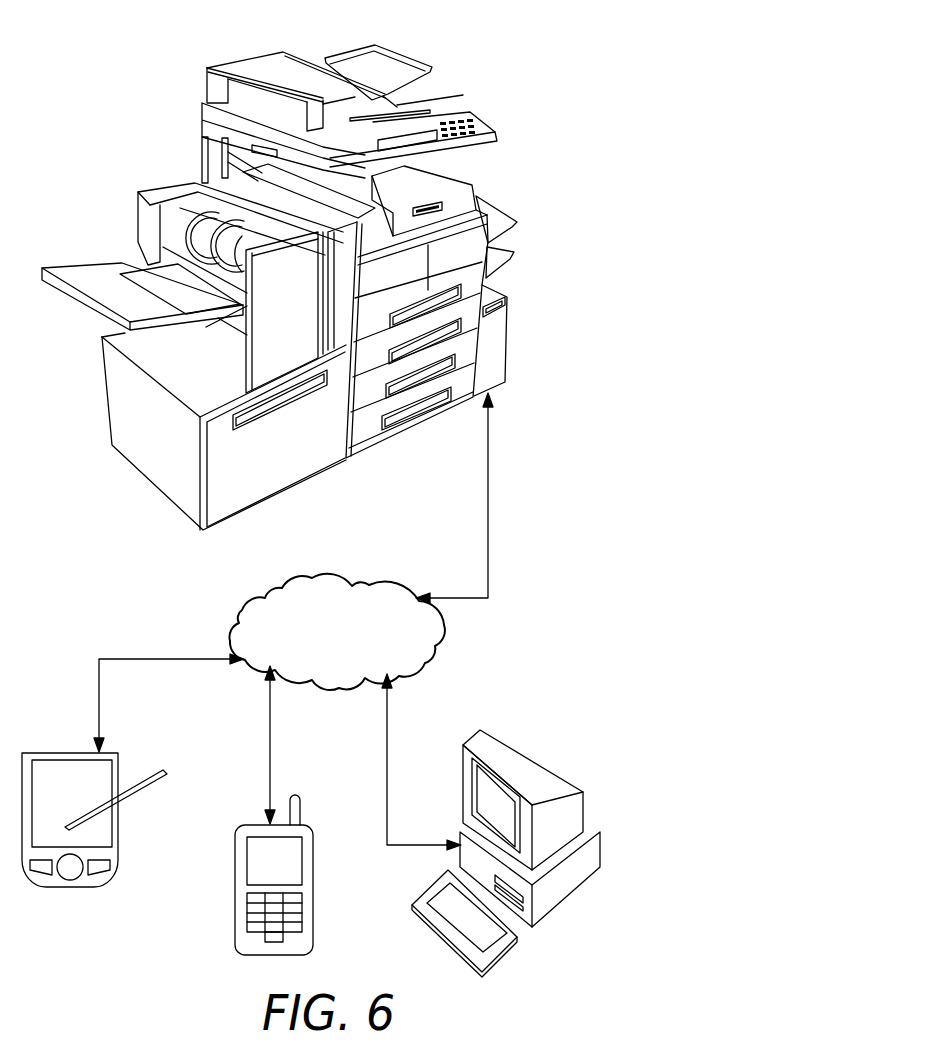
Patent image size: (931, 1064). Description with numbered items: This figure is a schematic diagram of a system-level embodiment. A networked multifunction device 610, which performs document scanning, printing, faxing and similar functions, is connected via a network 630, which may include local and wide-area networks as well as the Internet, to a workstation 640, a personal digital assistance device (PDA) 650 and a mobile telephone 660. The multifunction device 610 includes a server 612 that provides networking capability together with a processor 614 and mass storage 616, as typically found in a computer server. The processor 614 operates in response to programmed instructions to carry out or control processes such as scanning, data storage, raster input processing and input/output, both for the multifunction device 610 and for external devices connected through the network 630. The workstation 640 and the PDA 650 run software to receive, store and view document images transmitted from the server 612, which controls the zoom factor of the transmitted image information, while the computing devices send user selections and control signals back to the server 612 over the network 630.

The networked multifunction device 610 is at (425, 41).
The server 612 is at (519, 280).
The processor 614 is at (500, 338).
The mass storage 616 is at (505, 300).
The network 630 is at (369, 582).
The workstation 640 is at (550, 757).
The personal digital assistance device (PDA) 650 is at (120, 757).
The mobile telephone 660 is at (307, 823).